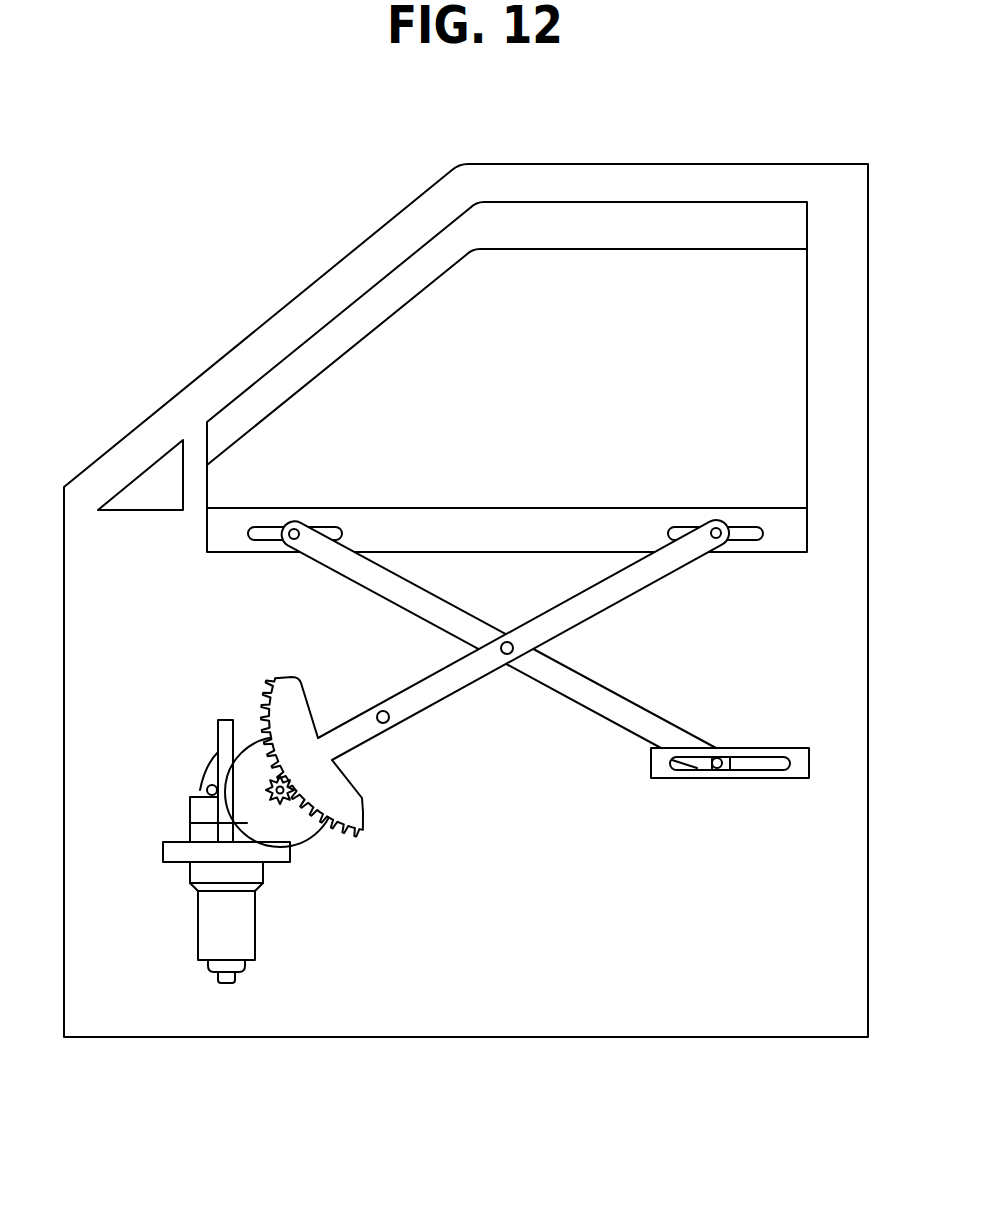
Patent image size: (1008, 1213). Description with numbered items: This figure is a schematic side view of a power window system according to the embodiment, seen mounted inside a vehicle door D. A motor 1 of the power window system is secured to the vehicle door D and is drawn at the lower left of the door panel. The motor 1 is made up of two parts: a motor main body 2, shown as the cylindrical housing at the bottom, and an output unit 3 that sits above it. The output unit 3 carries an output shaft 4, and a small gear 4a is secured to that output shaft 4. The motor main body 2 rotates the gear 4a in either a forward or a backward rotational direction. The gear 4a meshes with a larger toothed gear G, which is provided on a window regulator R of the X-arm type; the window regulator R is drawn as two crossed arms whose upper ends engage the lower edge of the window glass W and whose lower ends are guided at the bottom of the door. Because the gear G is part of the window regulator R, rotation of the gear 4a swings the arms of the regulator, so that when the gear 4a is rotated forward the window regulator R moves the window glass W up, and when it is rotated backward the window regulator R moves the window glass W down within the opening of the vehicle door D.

The vehicle door D is at (852, 572).
The window glass W is at (786, 345).
The window regulator R is at (655, 710).
The gear G is at (362, 800).
The motor 1 is at (158, 875).
The motor main body 2 is at (260, 935).
The output unit 3 is at (316, 842).
The output shaft 4 is at (280, 792).
The gear 4a is at (267, 787).